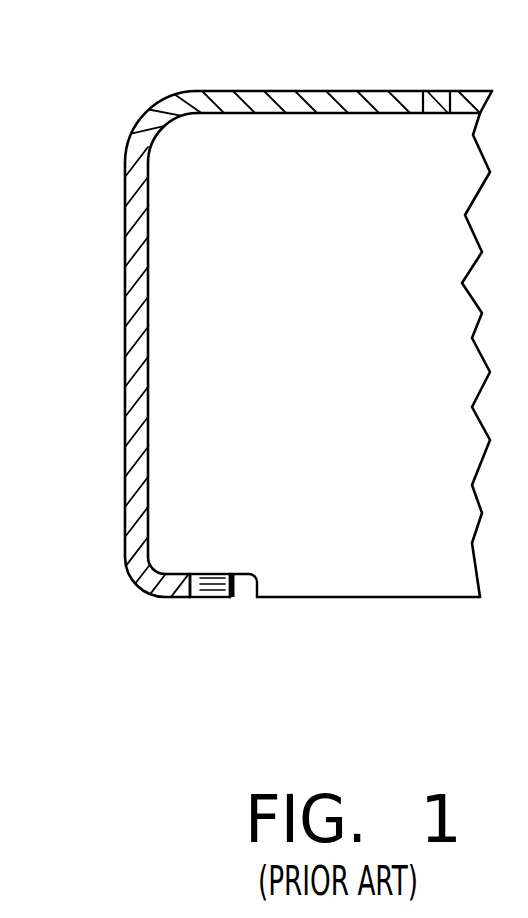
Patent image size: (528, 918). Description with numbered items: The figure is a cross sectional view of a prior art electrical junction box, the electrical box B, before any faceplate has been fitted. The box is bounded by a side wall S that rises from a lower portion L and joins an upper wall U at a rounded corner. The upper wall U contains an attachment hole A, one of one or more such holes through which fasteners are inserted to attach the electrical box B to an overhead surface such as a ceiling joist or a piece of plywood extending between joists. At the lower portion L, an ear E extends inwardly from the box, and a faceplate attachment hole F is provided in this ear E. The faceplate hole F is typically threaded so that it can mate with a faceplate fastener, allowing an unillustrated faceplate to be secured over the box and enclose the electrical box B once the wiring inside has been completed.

The side wall S is at (125, 223).
The upper wall U is at (327, 113).
The attachment hole A is at (433, 102).
The lower portion L is at (140, 585).
The faceplate attachment hole F is at (213, 598).
The ear E is at (242, 575).
The electrical box B is at (332, 340).